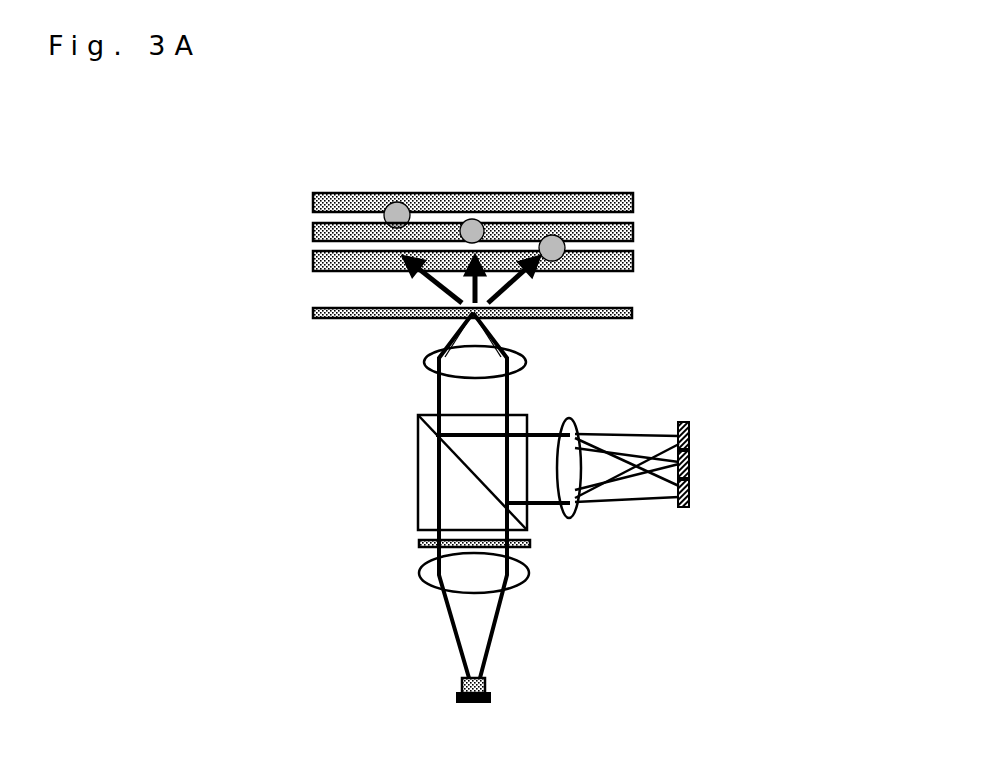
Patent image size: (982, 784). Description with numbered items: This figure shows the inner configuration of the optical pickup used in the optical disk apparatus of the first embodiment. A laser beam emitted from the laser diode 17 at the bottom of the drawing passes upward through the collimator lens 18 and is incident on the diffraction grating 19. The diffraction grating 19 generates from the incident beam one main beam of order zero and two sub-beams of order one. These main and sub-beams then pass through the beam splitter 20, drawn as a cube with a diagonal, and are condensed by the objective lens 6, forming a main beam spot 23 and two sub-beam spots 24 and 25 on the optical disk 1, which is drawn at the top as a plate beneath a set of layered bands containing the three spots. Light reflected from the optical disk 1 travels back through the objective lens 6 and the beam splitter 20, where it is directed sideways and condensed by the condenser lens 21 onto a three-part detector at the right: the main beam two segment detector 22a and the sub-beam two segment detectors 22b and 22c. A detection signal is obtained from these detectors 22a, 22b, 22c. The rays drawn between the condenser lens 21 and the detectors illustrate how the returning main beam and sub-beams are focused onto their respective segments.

The optical disk 1 is at (593, 305).
The objective lens 6 is at (423, 362).
The laser diode 17 is at (490, 700).
The collimator lens 18 is at (432, 587).
The diffraction grating 19 is at (520, 550).
The beam splitter 20 is at (430, 473).
The condenser lens 21 is at (572, 423).
The main beam two segment detector 22a is at (689, 456).
The sub-beam two segment detector 22b is at (689, 435).
The sub-beam two segment detector 22c is at (689, 497).
The main beam spot 23 is at (470, 230).
The sub-beam spot 24 is at (396, 214).
The sub-beam spot 25 is at (553, 247).